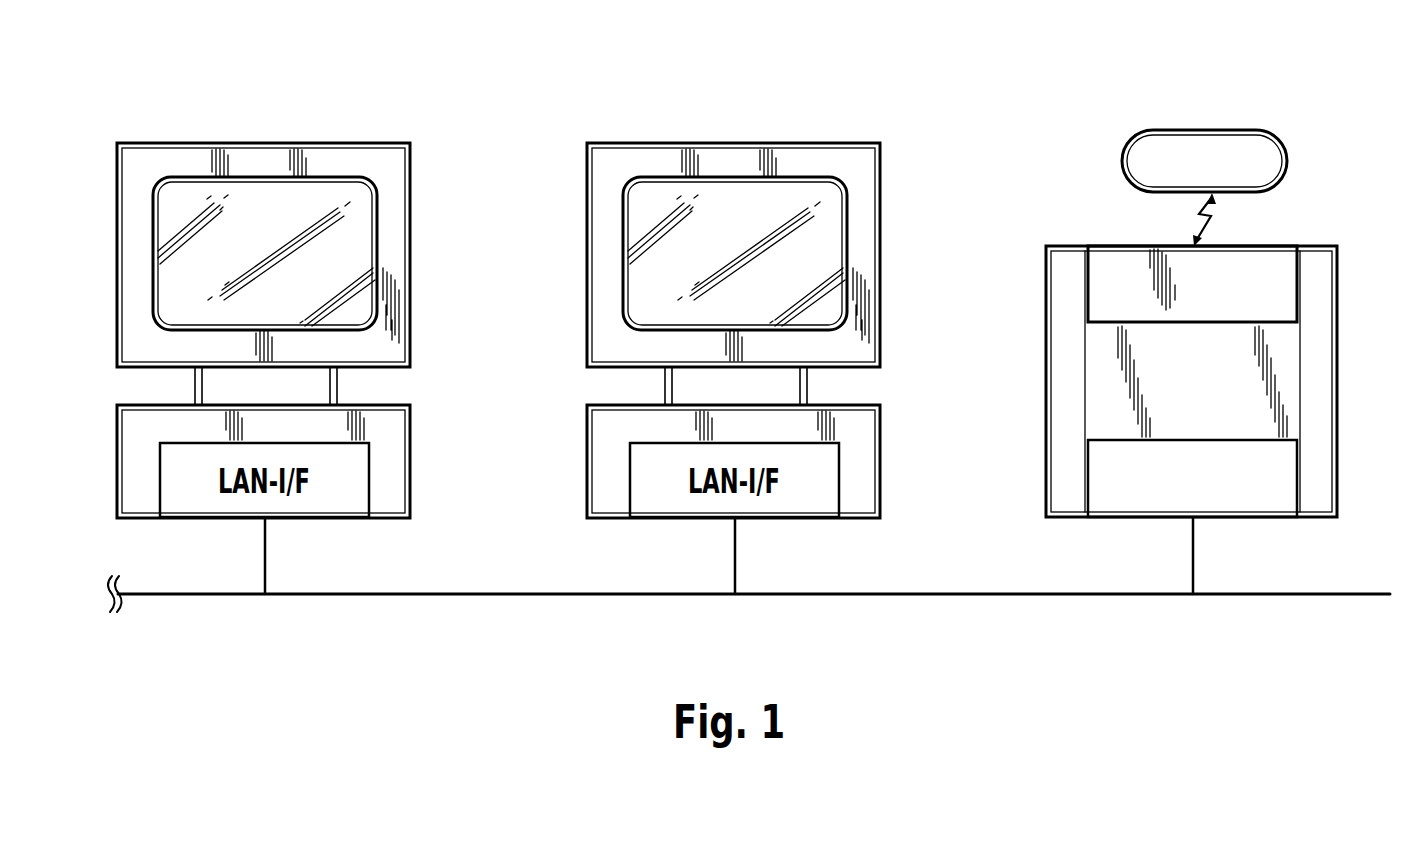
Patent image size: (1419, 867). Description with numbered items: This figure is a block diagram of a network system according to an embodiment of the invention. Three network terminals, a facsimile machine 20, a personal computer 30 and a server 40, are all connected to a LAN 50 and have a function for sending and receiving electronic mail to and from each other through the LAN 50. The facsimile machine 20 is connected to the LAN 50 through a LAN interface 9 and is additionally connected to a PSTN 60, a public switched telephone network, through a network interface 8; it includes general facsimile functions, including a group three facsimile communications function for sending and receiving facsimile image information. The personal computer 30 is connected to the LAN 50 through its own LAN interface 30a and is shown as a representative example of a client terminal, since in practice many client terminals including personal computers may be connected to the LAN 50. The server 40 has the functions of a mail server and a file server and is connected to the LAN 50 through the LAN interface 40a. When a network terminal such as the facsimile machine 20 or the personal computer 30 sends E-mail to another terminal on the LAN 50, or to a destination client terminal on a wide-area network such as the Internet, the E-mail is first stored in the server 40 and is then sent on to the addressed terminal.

The network interface 8 is at (1297, 283).
The LAN interface 9 is at (1300, 470).
The facsimile machine 20 is at (1232, 410).
The personal computer 30 is at (786, 342).
The LAN interface 30a is at (837, 472).
The server 40 is at (305, 368).
The LAN interface 40a is at (369, 475).
The LAN 50 is at (1307, 594).
The PSTN 60 is at (1255, 130).